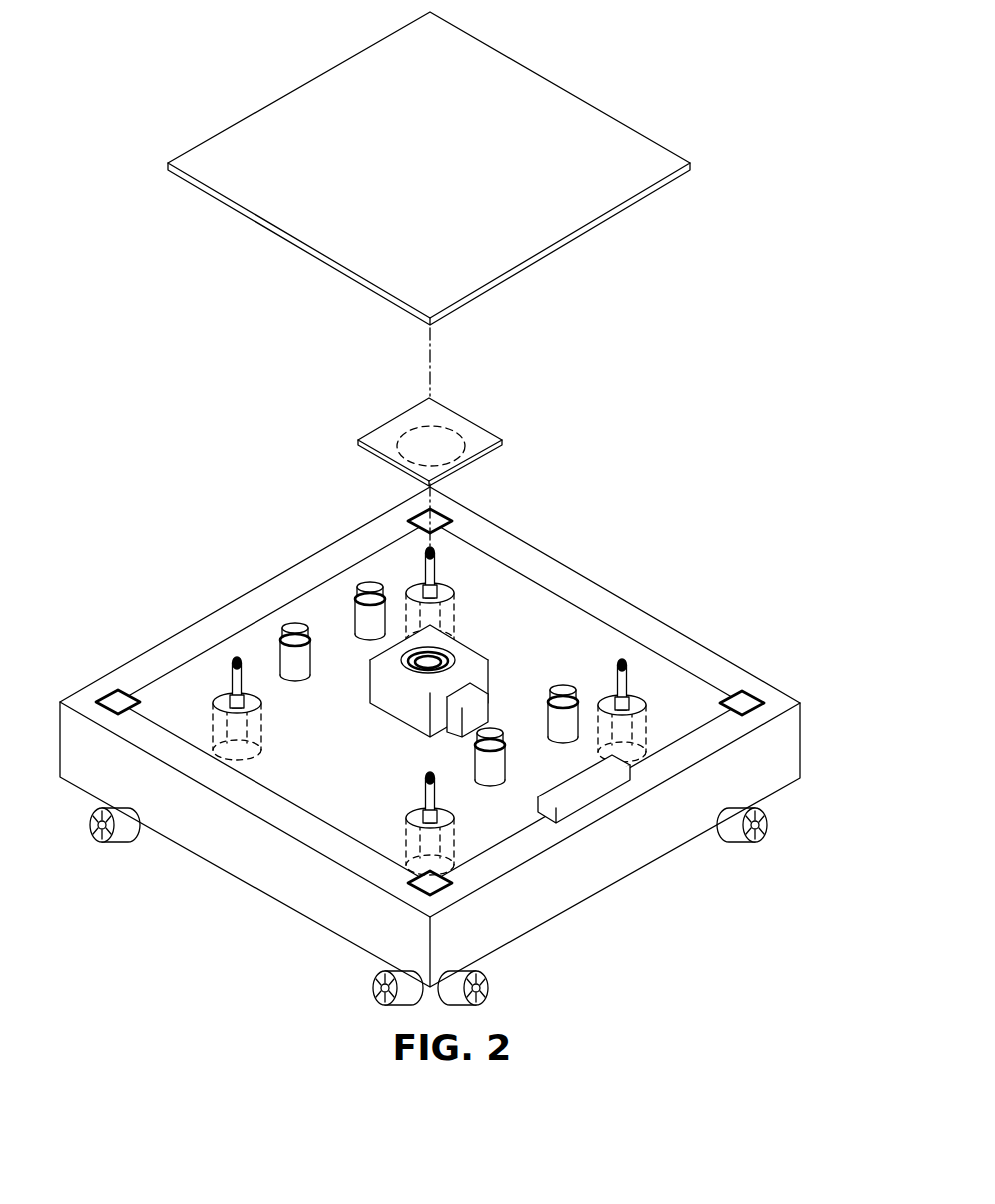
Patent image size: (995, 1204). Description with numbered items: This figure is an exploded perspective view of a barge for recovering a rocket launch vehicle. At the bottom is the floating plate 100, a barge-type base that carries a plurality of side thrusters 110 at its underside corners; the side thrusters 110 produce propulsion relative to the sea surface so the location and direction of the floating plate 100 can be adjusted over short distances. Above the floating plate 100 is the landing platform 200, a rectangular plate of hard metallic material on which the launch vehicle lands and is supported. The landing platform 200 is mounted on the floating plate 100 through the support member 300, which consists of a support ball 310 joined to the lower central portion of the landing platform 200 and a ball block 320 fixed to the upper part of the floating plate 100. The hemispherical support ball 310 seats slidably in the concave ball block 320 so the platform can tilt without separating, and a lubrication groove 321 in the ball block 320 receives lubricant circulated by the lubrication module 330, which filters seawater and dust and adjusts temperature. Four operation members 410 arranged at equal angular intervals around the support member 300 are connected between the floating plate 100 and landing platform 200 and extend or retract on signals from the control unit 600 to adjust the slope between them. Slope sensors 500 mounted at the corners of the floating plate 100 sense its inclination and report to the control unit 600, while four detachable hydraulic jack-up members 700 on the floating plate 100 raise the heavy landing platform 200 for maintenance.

The floating plate 100 is at (640, 855).
The side thrusters 110 is at (102, 842).
The landing platform 200 is at (555, 107).
The support member 300 is at (487, 708).
The support ball 310 is at (447, 445).
The ball block 320 is at (454, 605).
The lubrication groove 321 is at (413, 650).
The lubrication module 330 is at (450, 720).
The operation members 410 is at (237, 667).
The slope sensors 500 is at (738, 695).
The control unit 600 is at (570, 807).
The jack-up members 700 is at (293, 620).